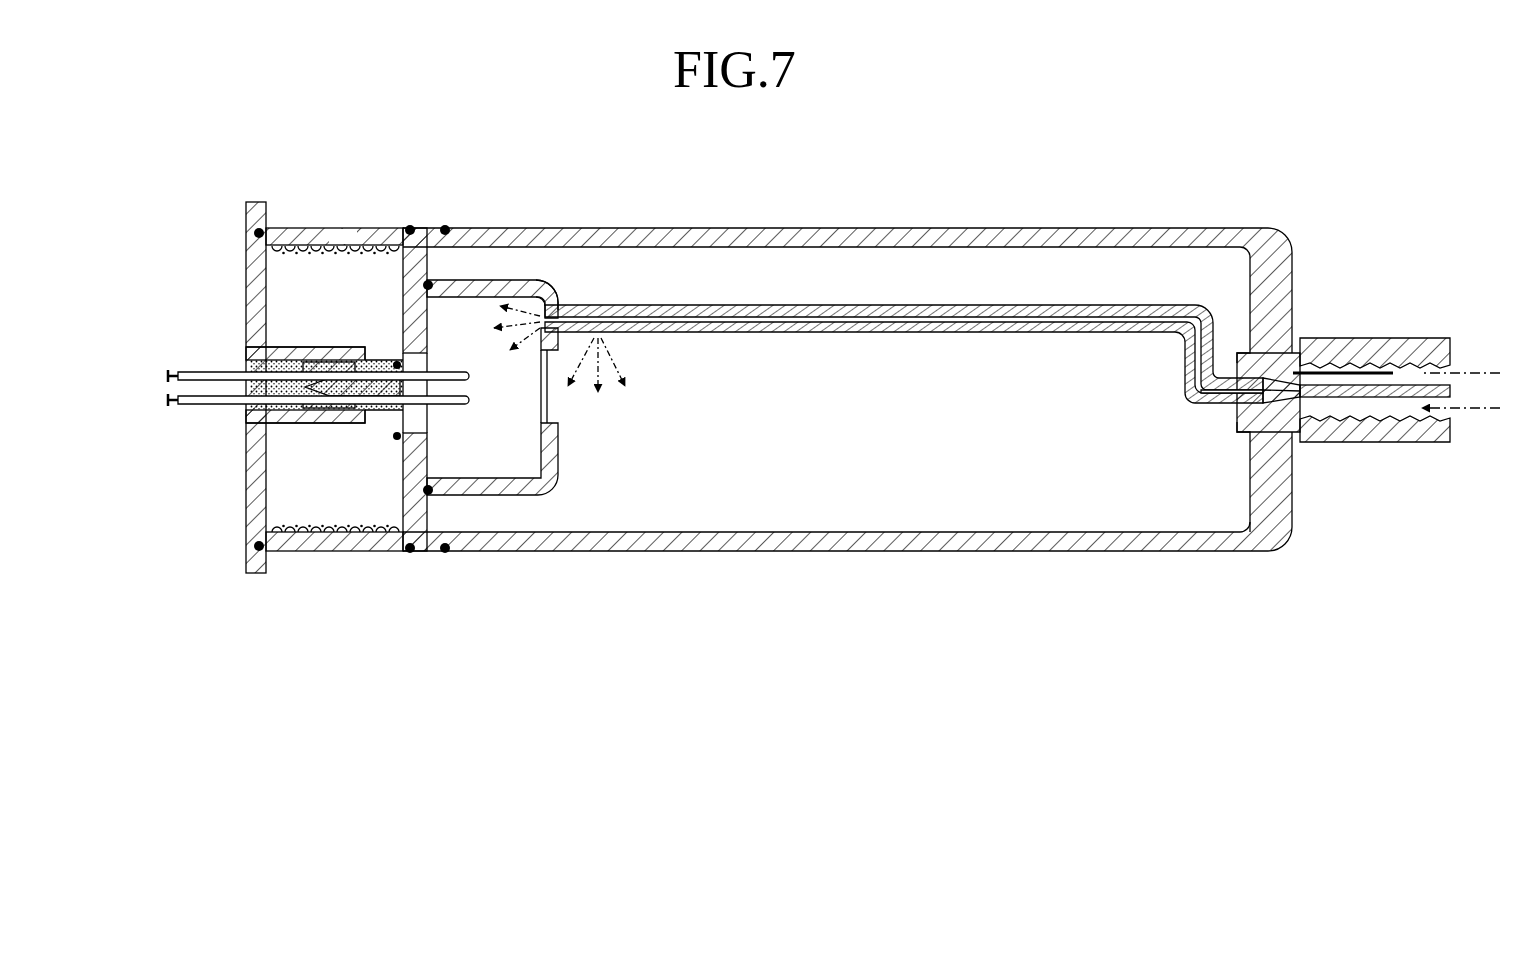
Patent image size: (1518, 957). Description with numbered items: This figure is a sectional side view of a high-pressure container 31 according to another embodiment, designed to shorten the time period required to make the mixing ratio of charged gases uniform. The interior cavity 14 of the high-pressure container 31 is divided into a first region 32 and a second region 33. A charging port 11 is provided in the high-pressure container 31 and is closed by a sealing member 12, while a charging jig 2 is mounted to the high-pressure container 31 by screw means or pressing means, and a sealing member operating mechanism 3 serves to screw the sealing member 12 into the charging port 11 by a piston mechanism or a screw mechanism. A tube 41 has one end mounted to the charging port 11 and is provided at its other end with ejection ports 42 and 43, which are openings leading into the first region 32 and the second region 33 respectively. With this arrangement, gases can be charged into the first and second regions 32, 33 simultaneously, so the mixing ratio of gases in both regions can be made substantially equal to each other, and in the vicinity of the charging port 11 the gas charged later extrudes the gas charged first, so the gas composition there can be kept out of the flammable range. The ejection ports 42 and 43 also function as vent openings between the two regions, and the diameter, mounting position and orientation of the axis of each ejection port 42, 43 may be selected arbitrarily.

The charging jig 2 is at (1367, 350).
The sealing member operating mechanism 3 is at (1407, 397).
The charging port 11 is at (1265, 395).
The sealing member 12 is at (1312, 350).
The cavity 14 is at (808, 485).
The high-pressure container 31 is at (708, 237).
The first region 32 is at (463, 312).
The second region 33 is at (623, 505).
The tube 41 is at (902, 305).
The ejection port 42 is at (532, 283).
The ejection port 43 is at (600, 330).